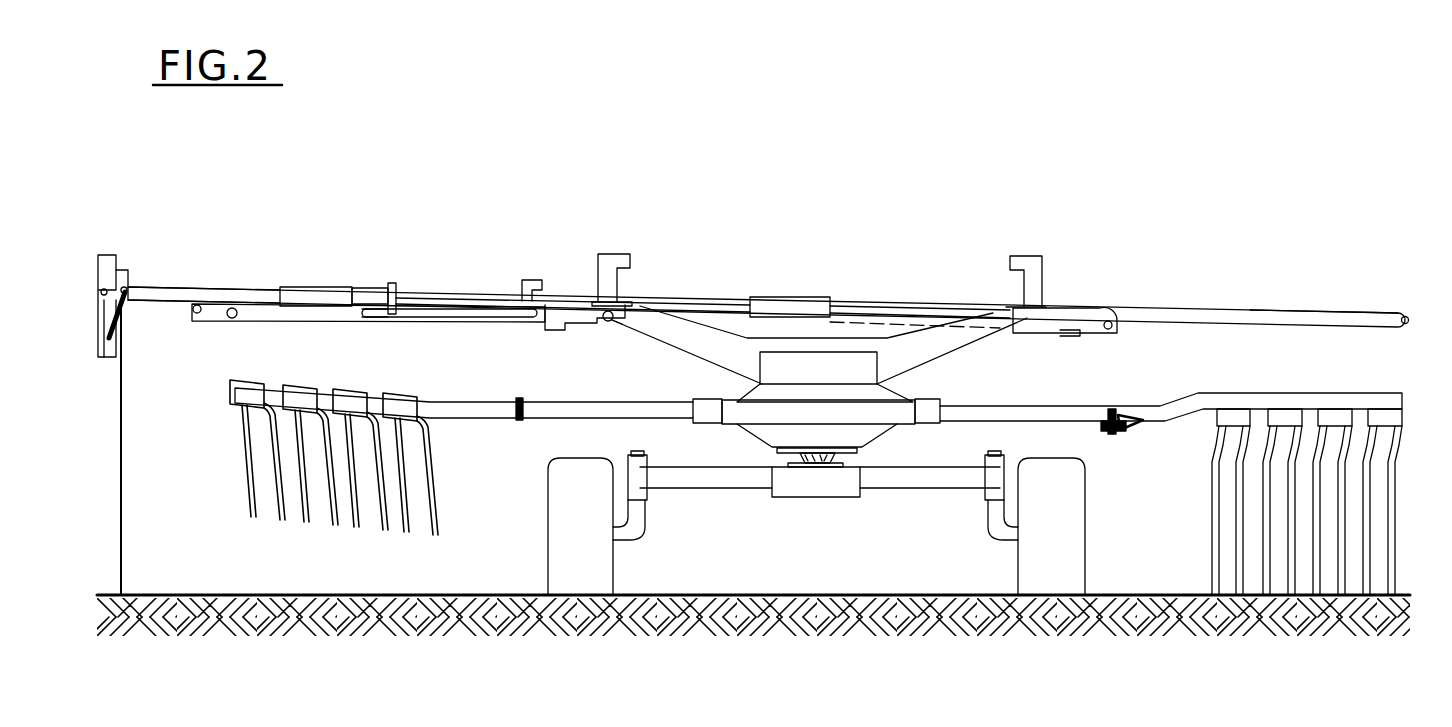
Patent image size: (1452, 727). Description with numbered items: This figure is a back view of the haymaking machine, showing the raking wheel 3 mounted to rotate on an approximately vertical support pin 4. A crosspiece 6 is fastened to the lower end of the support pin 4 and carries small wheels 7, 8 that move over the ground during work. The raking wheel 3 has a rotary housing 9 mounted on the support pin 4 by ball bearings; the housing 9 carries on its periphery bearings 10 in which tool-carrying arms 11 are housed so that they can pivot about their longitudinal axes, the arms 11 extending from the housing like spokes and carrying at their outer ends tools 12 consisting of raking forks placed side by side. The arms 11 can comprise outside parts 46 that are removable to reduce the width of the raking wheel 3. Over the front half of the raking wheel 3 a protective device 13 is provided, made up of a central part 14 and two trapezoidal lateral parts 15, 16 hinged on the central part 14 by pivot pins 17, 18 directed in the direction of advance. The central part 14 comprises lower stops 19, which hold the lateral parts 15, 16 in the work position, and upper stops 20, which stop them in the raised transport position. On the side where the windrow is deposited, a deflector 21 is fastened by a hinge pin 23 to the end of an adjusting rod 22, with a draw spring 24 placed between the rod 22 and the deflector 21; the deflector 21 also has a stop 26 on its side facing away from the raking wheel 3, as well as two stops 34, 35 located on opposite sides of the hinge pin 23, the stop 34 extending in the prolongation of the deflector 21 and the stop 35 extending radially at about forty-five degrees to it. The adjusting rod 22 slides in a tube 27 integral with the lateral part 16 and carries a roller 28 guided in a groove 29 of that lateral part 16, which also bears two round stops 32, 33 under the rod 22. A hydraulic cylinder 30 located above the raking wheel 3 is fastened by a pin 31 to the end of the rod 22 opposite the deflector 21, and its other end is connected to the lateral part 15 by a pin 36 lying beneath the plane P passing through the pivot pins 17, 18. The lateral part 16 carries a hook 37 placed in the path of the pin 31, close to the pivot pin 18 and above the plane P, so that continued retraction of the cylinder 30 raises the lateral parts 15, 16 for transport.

The raking wheel 3 is at (1020, 408).
The support pin 4 is at (818, 466).
The crosspiece 6 is at (711, 478).
The small wheel 7 is at (1080, 562).
The small wheel 8 is at (608, 562).
The rotary housing 9 is at (880, 436).
The bearings 10 is at (925, 403).
The tool-carrying arms 11 is at (546, 414).
The tools 12 is at (282, 518).
The protective device 13 is at (1205, 300).
The central part 14 is at (796, 351).
The lateral part 15 is at (1312, 318).
The lateral part 16 is at (452, 323).
The pivot pin 17 is at (1046, 309).
The pivot pin 18 is at (613, 322).
The lower stops 19 is at (560, 327).
The upper stops 20 is at (630, 260).
The deflector 21 is at (122, 522).
The adjusting rod 22 is at (236, 292).
The hinge pin 23 is at (102, 289).
The draw spring 24 is at (126, 314).
The stop 26 is at (113, 358).
The tube 27 is at (306, 288).
The roller 28 is at (386, 318).
The groove 29 is at (500, 320).
The hydraulic cylinder 30 is at (696, 305).
The pin 31 is at (392, 284).
The first stop 32 is at (198, 314).
The second stop 33 is at (238, 316).
The stop 34 is at (116, 258).
The stop 35 is at (126, 292).
The pin 36 is at (1111, 322).
The hook 37 is at (534, 279).
The outside parts 46 is at (450, 406).
The plane P is at (726, 308).